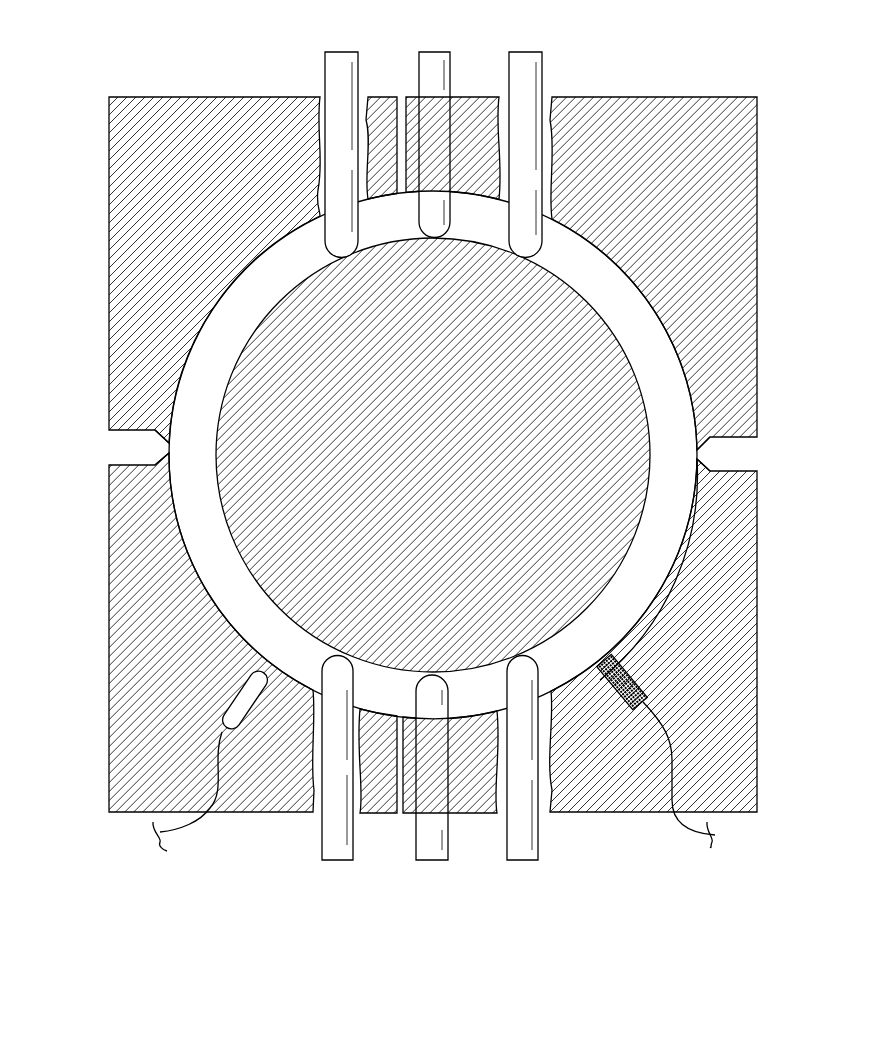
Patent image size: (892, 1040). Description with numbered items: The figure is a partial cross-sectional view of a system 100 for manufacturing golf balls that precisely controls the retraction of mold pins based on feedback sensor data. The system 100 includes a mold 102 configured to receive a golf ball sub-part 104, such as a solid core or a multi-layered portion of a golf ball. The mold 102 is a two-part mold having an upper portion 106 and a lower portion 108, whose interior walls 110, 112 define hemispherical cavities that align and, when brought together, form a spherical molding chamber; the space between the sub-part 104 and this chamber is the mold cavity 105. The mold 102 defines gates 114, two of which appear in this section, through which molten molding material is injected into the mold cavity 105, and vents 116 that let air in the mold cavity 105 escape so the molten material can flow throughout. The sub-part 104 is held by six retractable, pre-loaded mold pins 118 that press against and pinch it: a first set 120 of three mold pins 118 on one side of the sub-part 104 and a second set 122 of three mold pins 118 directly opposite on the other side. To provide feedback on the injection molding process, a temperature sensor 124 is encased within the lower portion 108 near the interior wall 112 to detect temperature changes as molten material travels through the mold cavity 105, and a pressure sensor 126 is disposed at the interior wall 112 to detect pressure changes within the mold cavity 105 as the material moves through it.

The system 100 is at (166, 39).
The mold 102 is at (453, 454).
The golf ball sub-part 104 is at (567, 304).
The mold cavity 105 is at (218, 331).
The upper portion 106 is at (752, 333).
The lower portion 108 is at (745, 550).
The interior wall 110 is at (643, 298).
The interior wall 112 is at (660, 592).
The gates 114 is at (109, 447).
The vents 116 is at (403, 97).
The mold pins 118 is at (433, 50).
The first set of mold pins 120 is at (582, 56).
The second set of mold pins 122 is at (296, 862).
The temperature sensor 124 is at (235, 693).
The pressure sensor 126 is at (643, 683).